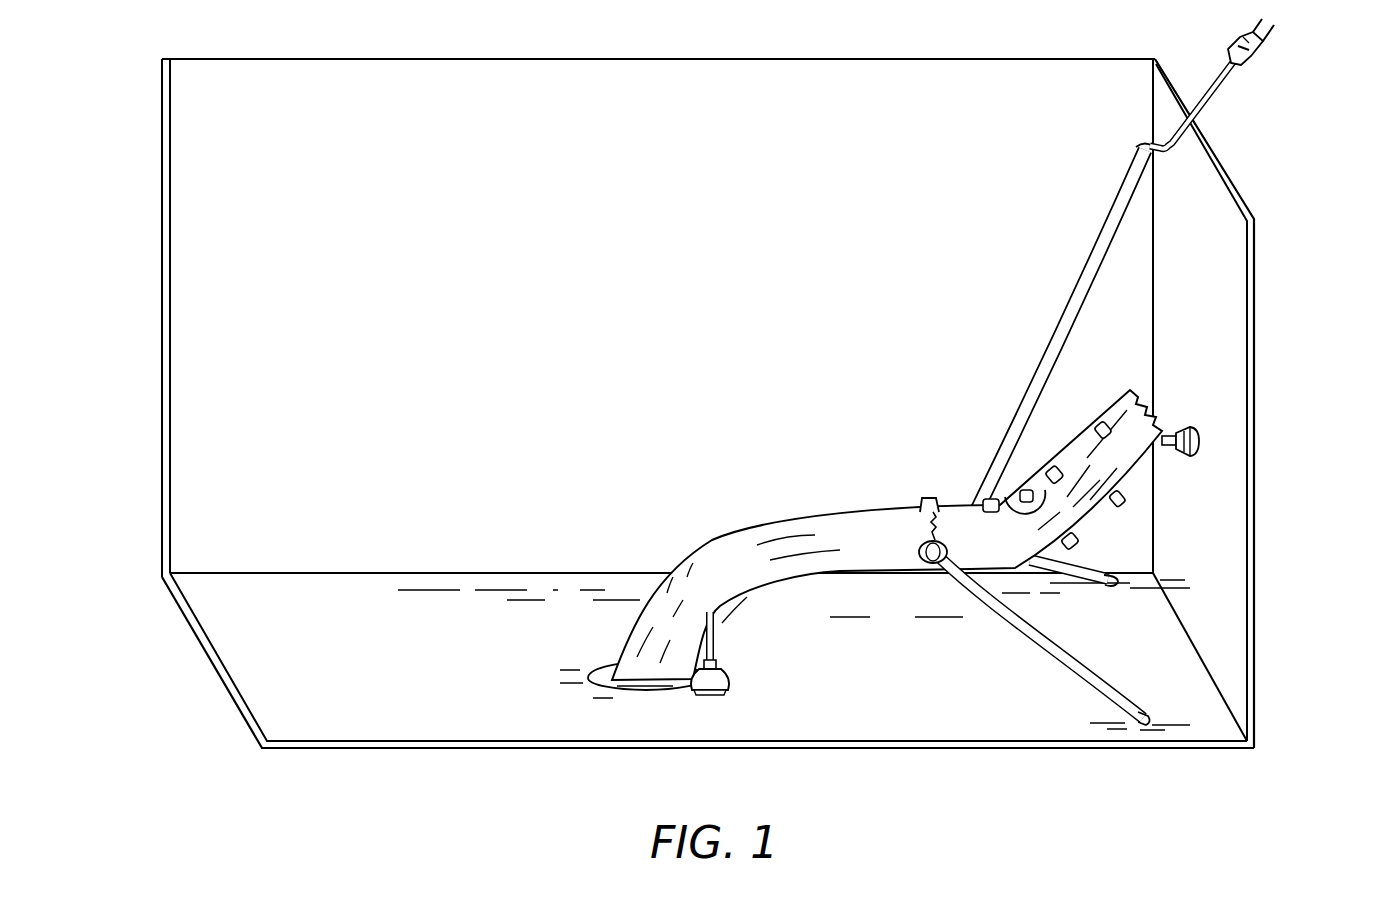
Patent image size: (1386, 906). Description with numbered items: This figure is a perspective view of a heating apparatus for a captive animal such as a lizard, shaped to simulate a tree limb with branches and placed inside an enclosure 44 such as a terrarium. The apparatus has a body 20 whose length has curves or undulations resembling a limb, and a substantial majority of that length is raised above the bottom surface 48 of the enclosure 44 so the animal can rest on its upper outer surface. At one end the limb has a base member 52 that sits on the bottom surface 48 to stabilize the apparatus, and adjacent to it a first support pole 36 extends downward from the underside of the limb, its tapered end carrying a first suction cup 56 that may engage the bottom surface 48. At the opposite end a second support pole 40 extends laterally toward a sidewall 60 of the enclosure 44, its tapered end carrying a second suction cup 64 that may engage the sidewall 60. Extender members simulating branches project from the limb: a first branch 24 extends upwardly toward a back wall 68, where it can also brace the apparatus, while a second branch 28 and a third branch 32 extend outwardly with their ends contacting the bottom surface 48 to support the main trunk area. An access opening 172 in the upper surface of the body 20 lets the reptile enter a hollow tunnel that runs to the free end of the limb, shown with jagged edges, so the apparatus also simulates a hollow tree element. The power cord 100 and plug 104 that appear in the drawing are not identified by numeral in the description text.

The body 20 is at (790, 527).
The first branch 24 is at (1022, 393).
The second branch 28 is at (937, 496).
The third branch 32 is at (1002, 621).
The first support pole 36 is at (712, 638).
The second support pole 40 is at (1164, 446).
The enclosure 44 is at (600, 59).
The bottom surface 48 is at (440, 732).
The base member 52 is at (600, 684).
The first suction cup 56 is at (723, 690).
The sidewall 60 is at (1225, 193).
The second suction cup 64 is at (1200, 430).
The back wall 68 is at (417, 67).
The power cord 100 is at (1220, 90).
The electrical plug 104 is at (1263, 44).
The access opening 172 is at (1025, 475).